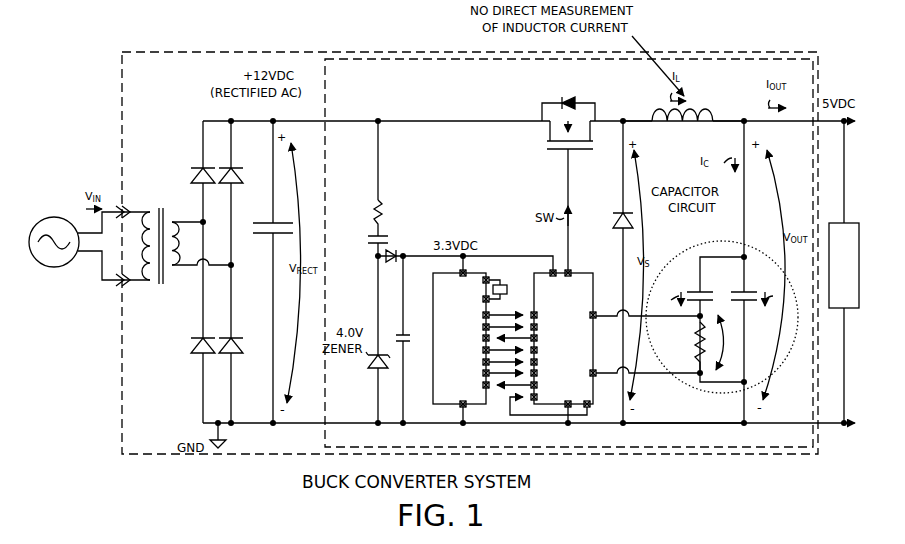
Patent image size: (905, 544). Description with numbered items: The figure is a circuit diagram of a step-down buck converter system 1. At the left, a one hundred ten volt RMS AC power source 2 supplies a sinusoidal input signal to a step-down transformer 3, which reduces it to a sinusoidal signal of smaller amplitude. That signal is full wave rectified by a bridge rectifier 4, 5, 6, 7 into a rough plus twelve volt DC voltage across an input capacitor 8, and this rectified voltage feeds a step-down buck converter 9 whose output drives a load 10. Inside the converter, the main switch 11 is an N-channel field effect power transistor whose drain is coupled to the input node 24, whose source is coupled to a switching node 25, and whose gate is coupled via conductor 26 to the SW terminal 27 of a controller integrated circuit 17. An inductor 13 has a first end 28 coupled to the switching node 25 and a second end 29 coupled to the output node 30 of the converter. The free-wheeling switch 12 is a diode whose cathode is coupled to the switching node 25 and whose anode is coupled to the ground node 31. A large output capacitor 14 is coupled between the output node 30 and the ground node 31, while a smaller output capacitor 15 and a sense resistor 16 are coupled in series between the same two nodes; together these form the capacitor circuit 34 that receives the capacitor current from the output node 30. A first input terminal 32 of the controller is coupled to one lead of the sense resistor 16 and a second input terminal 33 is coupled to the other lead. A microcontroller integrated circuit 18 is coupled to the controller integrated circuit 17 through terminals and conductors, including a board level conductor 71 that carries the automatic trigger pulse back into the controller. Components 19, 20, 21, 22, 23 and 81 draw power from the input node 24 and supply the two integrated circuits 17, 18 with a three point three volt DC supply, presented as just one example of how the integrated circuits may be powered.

The buck converter system 1 is at (771, 36).
The AC power source 2 is at (54, 217).
The step-down transformer 3 is at (155, 206).
The bridge rectifier diode 4 is at (190, 176).
The bridge rectifier diode 5 is at (240, 176).
The bridge rectifier diode 6 is at (190, 346).
The bridge rectifier diode 7 is at (240, 346).
The input capacitor 8 is at (262, 236).
The step-down buck converter 9 is at (390, 58).
The load 10 is at (861, 220).
The main switch 11 is at (515, 95).
The free-wheeling switch 12 is at (616, 221).
The inductor 13 is at (689, 126).
The large output capacitor 14 is at (748, 305).
The smaller output capacitor 15 is at (700, 292).
The sense resistor 16 is at (690, 342).
The controller integrated circuit 17 is at (563, 346).
The microcontroller integrated circuit 18 is at (461, 339).
The component 19 is at (370, 212).
The component 20 is at (370, 240).
The component 21 is at (371, 370).
The component 22 is at (392, 263).
The component 23 is at (397, 331).
The input node 24 is at (404, 117).
The switching node 25 is at (621, 117).
The conductor 26 is at (568, 192).
The SW terminal 27 is at (569, 272).
The first end of inductor 28 is at (651, 117).
The second end of inductor 29 is at (721, 117).
The output node 30 is at (753, 117).
The ground node 31 is at (673, 417).
The first input terminal 32 is at (596, 315).
The second input terminal 33 is at (596, 373).
The capacitor circuit 34 is at (722, 319).
The board level conductor 71 is at (508, 415).
The component 81 is at (502, 286).